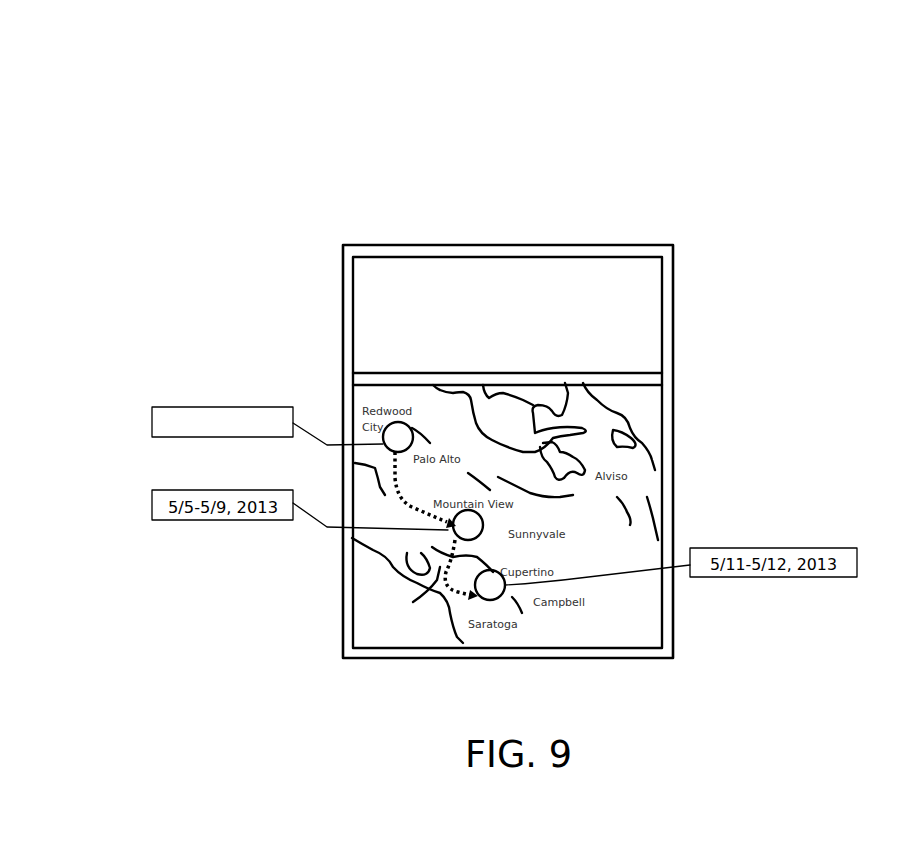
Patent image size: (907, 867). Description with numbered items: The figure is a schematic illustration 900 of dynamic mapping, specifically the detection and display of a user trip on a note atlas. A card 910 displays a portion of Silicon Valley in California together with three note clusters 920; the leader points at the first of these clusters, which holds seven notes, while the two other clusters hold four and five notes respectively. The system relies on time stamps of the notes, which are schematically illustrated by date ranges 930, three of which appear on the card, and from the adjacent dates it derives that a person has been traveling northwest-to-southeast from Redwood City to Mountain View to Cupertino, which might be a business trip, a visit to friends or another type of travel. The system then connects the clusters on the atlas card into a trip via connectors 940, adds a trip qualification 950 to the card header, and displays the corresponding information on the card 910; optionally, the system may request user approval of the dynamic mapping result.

The schematic illustration 900 is at (853, 138).
The card 910 is at (367, 248).
The note clusters 920 is at (383, 437).
The date ranges 930 is at (142, 421).
The connectors 940 is at (413, 602).
The trip qualification 950 is at (537, 338).